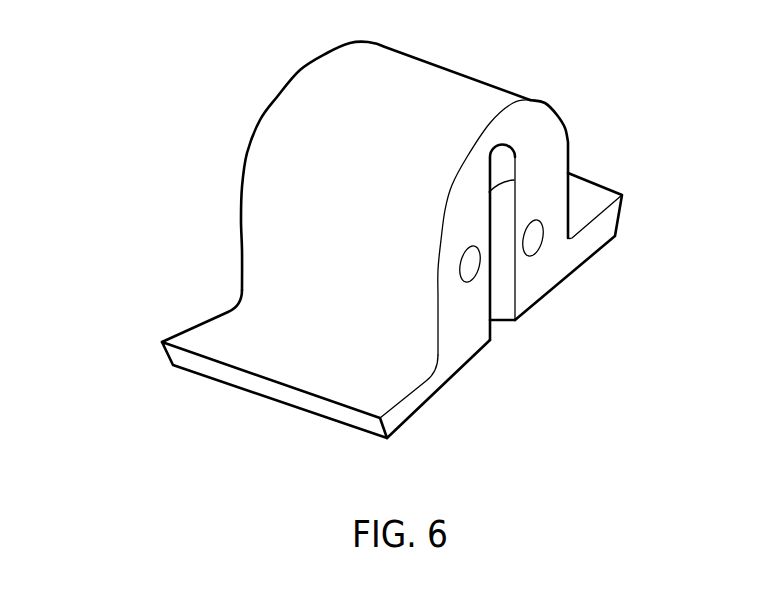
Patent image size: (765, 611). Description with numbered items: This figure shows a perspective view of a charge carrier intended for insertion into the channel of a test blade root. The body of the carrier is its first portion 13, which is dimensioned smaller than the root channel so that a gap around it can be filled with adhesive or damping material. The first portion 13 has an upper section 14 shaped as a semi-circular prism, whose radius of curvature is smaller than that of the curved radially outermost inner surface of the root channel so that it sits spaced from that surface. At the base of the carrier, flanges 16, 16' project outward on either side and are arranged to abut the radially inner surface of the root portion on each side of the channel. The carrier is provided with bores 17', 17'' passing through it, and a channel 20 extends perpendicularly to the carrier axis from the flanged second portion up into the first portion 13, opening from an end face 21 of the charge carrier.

The first portion 13 is at (159, 83).
The upper section 14 is at (537, 158).
The flange 16 is at (274, 390).
The flange 16' is at (586, 230).
The bore 17' is at (583, 257).
The bore 17'' is at (429, 275).
The channel 20 is at (505, 282).
The end face 21 is at (460, 358).